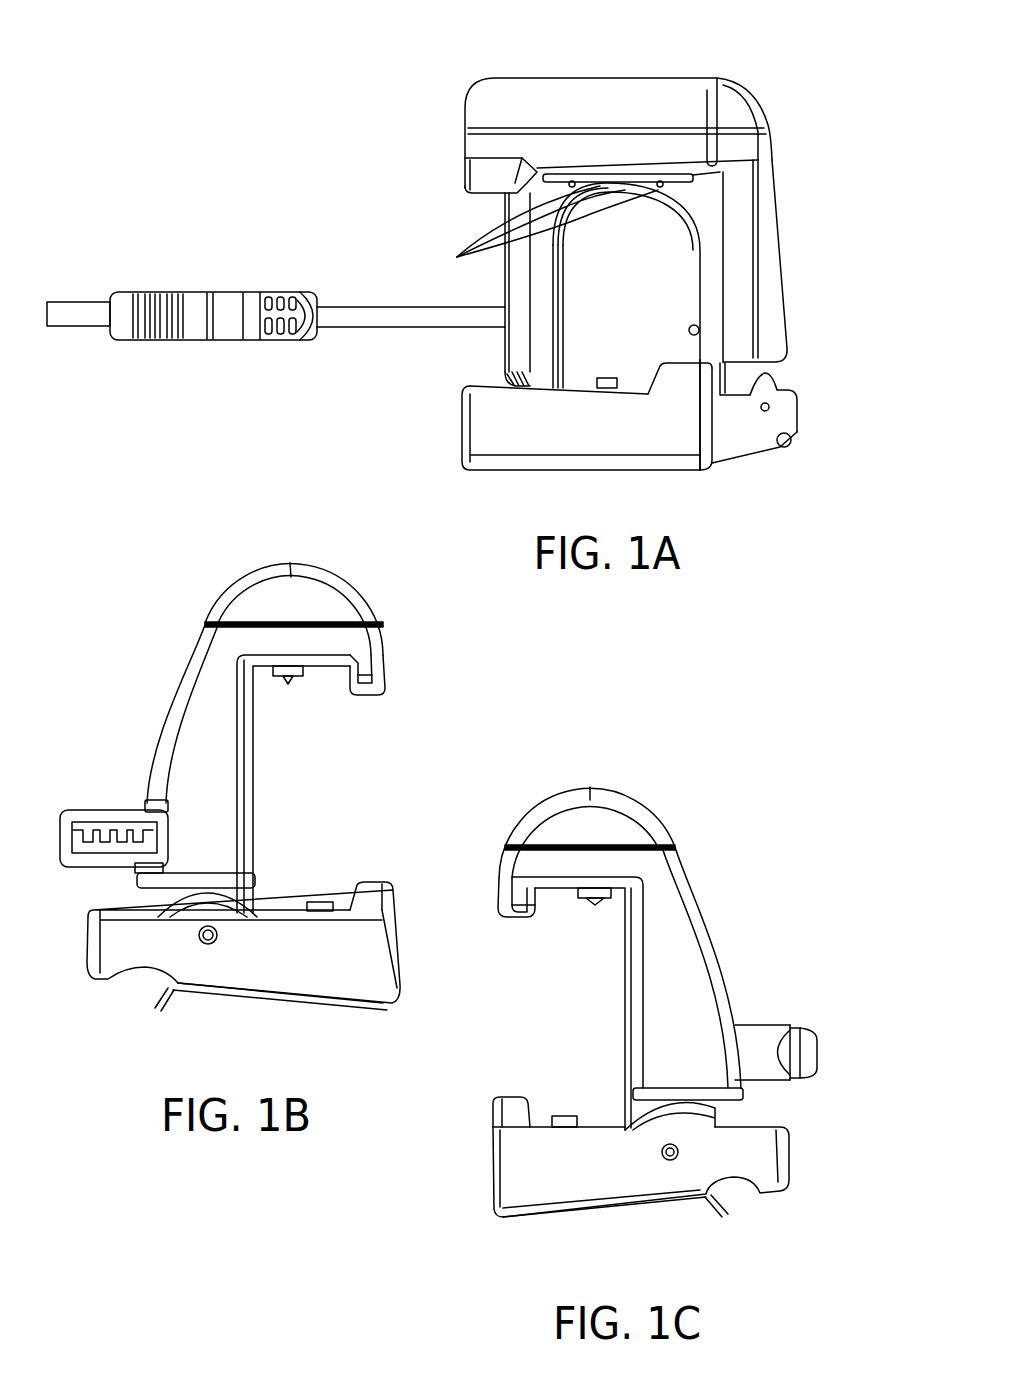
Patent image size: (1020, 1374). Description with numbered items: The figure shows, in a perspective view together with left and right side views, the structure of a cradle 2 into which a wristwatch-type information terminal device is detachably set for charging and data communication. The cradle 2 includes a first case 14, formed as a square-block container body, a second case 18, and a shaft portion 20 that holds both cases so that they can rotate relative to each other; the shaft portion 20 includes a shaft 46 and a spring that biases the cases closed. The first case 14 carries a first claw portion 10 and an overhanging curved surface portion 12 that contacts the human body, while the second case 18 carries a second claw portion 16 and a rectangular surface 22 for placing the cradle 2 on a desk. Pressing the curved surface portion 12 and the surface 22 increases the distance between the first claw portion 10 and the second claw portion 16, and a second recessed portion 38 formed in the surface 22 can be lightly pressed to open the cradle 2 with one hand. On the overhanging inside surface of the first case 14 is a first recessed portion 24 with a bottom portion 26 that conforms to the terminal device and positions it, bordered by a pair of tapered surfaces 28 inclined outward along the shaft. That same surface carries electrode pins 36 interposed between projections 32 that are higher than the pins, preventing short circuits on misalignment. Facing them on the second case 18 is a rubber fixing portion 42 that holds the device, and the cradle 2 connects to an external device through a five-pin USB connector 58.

In FIG. 1A, the cradle 2 is at (792, 112).
In FIG. 1B, the cradle 2 is at (190, 578).
In FIG. 1C, the cradle 2 is at (688, 782).
In FIG. 1A, the first claw portion 10 is at (495, 182).
In FIG. 1B, the first claw portion 10 is at (372, 672).
In FIG. 1C, the first claw portion 10 is at (510, 898).
In FIG. 1A, the curved surface portion 12 is at (583, 108).
In FIG. 1B, the curved surface portion 12 is at (284, 562).
In FIG. 1C, the curved surface portion 12 is at (583, 788).
In FIG. 1A, the first case 14 is at (520, 118).
In FIG. 1B, the first case 14 is at (210, 697).
In FIG. 1C, the first case 14 is at (663, 910).
In FIG. 1A, the second claw portion 16 is at (684, 382).
In FIG. 1B, the second claw portion 16 is at (373, 897).
In FIG. 1C, the second claw portion 16 is at (510, 1117).
In FIG. 1A, the second case 18 is at (500, 422).
In FIG. 1B, the second case 18 is at (352, 952).
In FIG. 1C, the second case 18 is at (520, 1176).
In FIG. 1A, the shaft portion 20 is at (765, 412).
In FIG. 1B, the shaft portion 20 is at (210, 948).
In FIG. 1C, the shaft portion 20 is at (670, 1162).
In FIG. 1A, the surface 22 is at (570, 472).
In FIG. 1B, the surface 22 is at (335, 1007).
In FIG. 1C, the surface 22 is at (565, 1215).
In FIG. 1A, the first recessed portion 24 is at (702, 333).
In FIG. 1A, the bottom portion 26 is at (672, 268).
In FIG. 1A, the tapered surfaces 28 is at (523, 288).
In FIG. 1B, the tapered surfaces 28 is at (247, 766).
In FIG. 1C, the tapered surfaces 28 is at (632, 1028).
In FIG. 1A, the projections 32 is at (580, 186).
In FIG. 1B, the projections 32 is at (292, 682).
In FIG. 1C, the projections 32 is at (592, 905).
In FIG. 1A, the electrode pins 36 is at (457, 257).
In FIG. 1A, the second recessed portion 38 is at (805, 445).
In FIG. 1B, the second recessed portion 38 is at (135, 980).
In FIG. 1C, the second recessed portion 38 is at (742, 1197).
In FIG. 1A, the fixing portion 42 is at (597, 381).
In FIG. 1B, the fixing portion 42 is at (320, 902).
In FIG. 1C, the fixing portion 42 is at (560, 1115).
In FIG. 1A, the shaft 46 is at (735, 459).
In FIG. 1B, the shaft 46 is at (198, 991).
In FIG. 1C, the shaft 46 is at (652, 1206).
In FIG. 1A, the USB connector 58 is at (82, 312).
In FIG. 1B, the USB connector 58 is at (80, 810).
In FIG. 1C, the USB connector 58 is at (776, 1052).